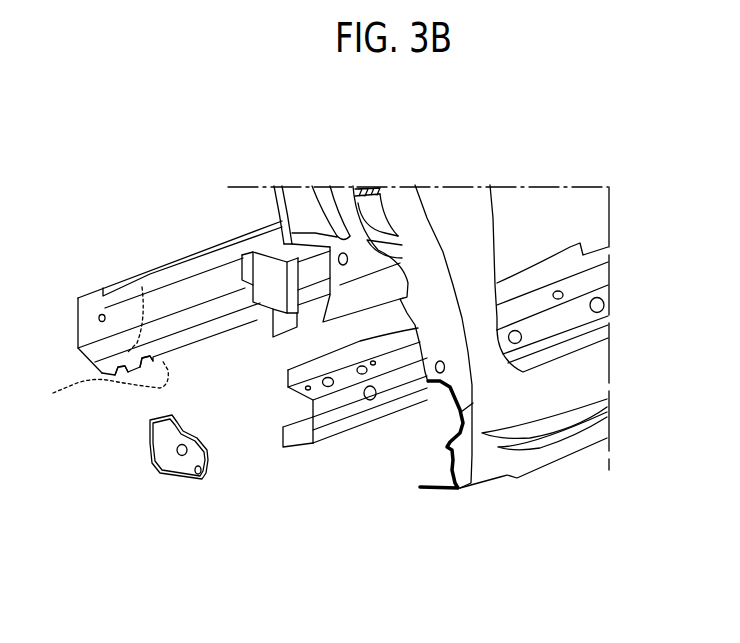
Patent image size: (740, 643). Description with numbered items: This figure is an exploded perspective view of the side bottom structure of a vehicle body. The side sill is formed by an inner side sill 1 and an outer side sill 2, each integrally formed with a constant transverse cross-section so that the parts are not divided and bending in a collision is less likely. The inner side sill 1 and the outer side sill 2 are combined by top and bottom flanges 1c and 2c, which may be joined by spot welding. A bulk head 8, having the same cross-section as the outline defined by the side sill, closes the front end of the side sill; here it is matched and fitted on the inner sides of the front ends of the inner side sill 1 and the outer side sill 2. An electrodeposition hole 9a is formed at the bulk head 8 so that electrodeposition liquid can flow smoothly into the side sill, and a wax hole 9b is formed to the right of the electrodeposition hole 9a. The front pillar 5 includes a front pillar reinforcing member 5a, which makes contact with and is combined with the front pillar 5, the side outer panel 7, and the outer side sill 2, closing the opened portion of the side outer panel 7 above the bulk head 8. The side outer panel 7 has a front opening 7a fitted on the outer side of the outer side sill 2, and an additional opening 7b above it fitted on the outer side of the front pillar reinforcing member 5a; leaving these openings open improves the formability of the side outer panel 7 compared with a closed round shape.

The inner side sill 1 is at (193, 263).
The top and bottom flange of the inner side sill 1c is at (53, 393).
The outer side sill 2 is at (530, 305).
The top and bottom flange of the outer side sill 2c is at (288, 378).
The front pillar 5 is at (333, 200).
The front pillar reinforcing member 5a is at (275, 273).
The side outer panel 7 is at (556, 403).
The front opening 7a is at (430, 493).
The additional opening 7b is at (473, 403).
The bulk head 8 is at (148, 442).
The electrodeposition hole 9a is at (173, 460).
The wax hole 9b is at (190, 480).